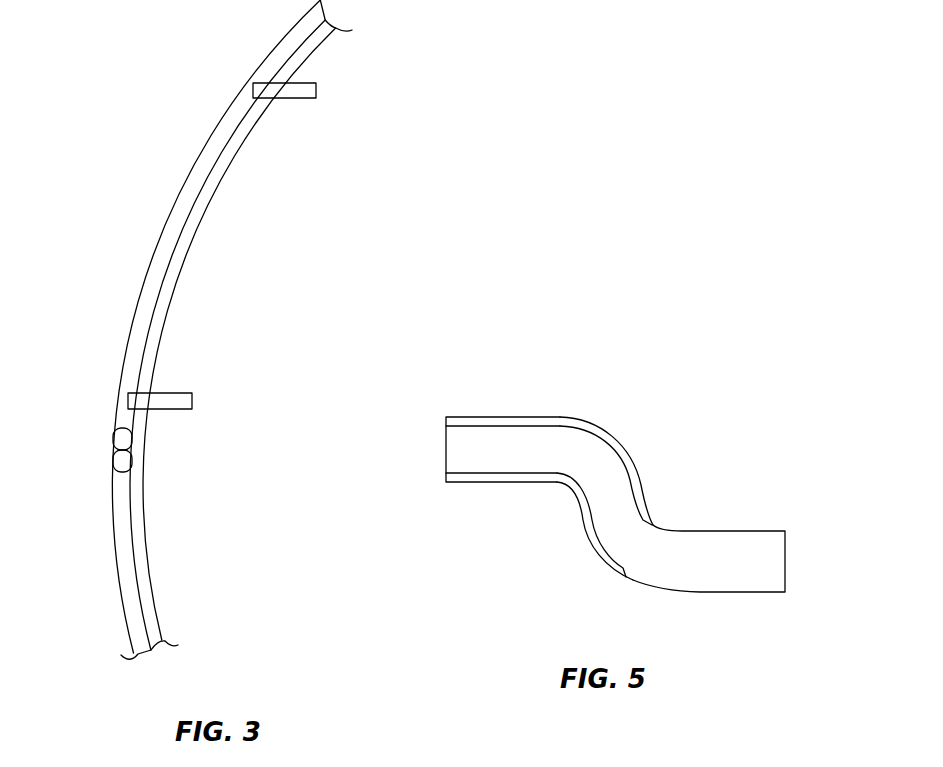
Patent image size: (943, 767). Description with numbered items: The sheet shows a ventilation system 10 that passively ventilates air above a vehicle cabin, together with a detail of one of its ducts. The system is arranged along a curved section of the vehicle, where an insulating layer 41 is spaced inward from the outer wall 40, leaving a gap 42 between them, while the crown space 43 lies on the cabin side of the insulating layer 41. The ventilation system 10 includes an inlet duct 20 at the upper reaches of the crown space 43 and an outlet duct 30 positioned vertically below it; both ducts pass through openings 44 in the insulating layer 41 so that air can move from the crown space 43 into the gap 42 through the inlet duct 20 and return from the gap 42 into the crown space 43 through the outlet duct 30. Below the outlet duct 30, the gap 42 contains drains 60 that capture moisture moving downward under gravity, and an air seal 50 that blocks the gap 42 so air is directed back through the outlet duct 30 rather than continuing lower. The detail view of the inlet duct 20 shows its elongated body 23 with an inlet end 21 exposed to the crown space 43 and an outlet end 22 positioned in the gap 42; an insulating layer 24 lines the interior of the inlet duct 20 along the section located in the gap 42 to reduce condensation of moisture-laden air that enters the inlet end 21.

In FIG. 3, the ventilation system 10 is at (405, 215).
In FIG. 3, the inlet duct 20 is at (287, 88).
In FIG. 5, the inlet duct 20 is at (622, 466).
In FIG. 5, the inlet end 21 is at (787, 550).
In FIG. 5, the outlet end 22 is at (446, 432).
In FIG. 5, the elongated body 23 is at (627, 483).
In FIG. 5, the insulating layer 24 is at (640, 480).
In FIG. 3, the outlet duct 30 is at (158, 398).
In FIG. 3, the outer wall 40 is at (192, 329).
In FIG. 3, the insulating layer 41 is at (185, 243).
In FIG. 3, the gap 42 is at (198, 172).
In FIG. 3, the crown space 43 is at (318, 202).
In FIG. 3, the opening 44 is at (266, 100).
In FIG. 3, the air seal 50 is at (115, 467).
In FIG. 3, the drain 60 is at (115, 439).